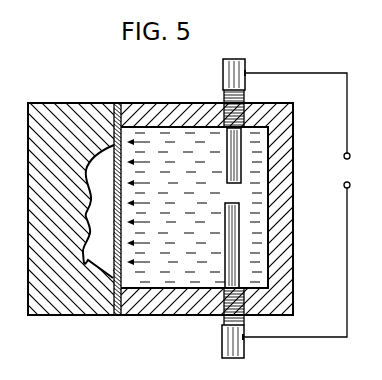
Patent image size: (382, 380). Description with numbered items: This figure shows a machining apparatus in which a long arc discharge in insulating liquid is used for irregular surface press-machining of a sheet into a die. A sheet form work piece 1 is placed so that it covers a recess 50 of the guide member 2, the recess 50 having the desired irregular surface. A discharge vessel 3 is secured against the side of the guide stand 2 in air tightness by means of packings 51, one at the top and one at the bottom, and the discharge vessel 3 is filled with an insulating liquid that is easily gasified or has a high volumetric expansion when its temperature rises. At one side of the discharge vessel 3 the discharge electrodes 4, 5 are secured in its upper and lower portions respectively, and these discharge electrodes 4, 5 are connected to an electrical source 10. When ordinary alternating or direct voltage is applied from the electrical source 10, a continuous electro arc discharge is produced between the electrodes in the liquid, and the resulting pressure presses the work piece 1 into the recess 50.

The work piece 1 is at (122, 272).
The guide member 2 is at (73, 315).
The discharge vessel 3 is at (293, 292).
The discharge electrode 4 is at (227, 175).
The discharge electrode 5 is at (225, 228).
The electrical source 10 is at (309, 205).
The recess 50 is at (84, 244).
The packing 51 is at (117, 103).